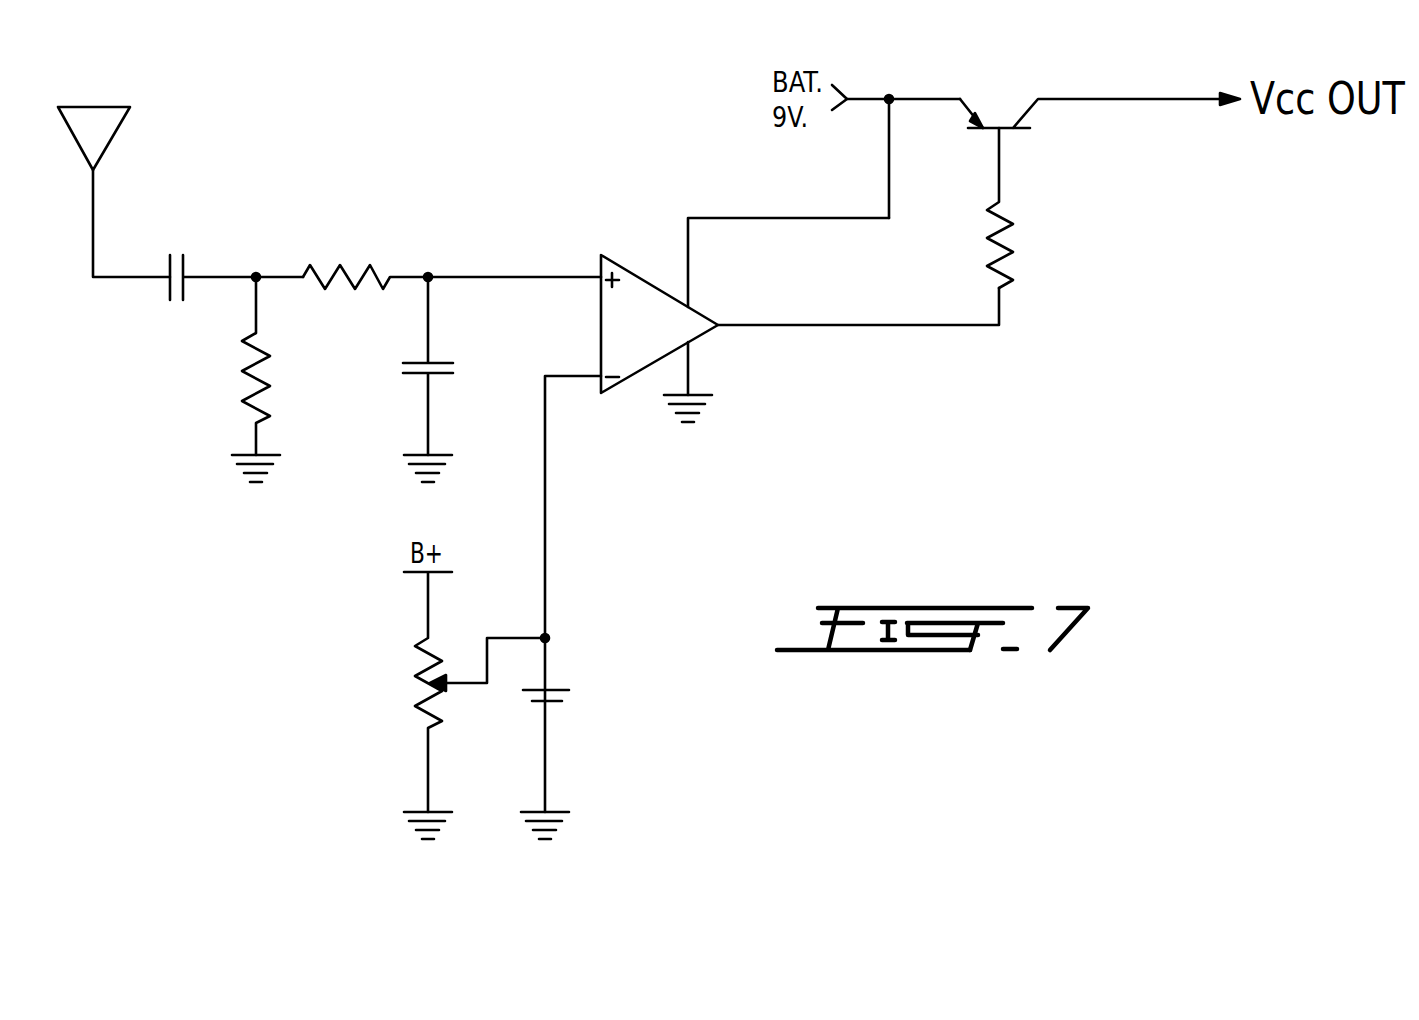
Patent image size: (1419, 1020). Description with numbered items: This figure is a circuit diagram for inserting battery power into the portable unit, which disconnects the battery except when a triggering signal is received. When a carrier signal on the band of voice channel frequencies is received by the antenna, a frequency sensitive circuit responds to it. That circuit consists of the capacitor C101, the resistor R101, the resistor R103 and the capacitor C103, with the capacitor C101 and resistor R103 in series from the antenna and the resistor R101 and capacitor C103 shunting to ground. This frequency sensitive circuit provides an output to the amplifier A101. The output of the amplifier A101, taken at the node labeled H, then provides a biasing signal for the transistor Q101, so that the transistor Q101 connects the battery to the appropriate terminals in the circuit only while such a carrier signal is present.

The capacitor C101 is at (204, 261).
The resistor R103 is at (365, 258).
The resistor R101 is at (232, 379).
The capacitor C103 is at (398, 379).
The amplifier A101 is at (645, 302).
The transistor Q101 is at (1090, 177).
The comparator output node H is at (858, 306).